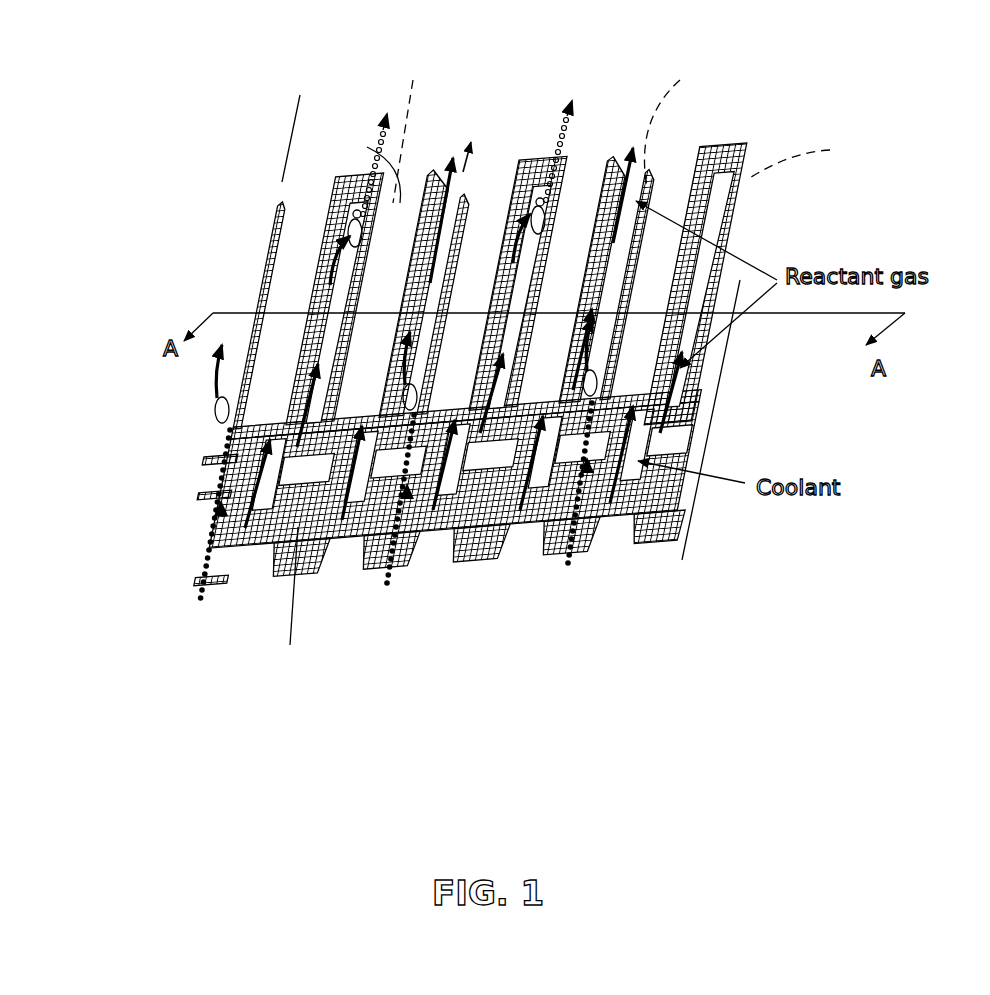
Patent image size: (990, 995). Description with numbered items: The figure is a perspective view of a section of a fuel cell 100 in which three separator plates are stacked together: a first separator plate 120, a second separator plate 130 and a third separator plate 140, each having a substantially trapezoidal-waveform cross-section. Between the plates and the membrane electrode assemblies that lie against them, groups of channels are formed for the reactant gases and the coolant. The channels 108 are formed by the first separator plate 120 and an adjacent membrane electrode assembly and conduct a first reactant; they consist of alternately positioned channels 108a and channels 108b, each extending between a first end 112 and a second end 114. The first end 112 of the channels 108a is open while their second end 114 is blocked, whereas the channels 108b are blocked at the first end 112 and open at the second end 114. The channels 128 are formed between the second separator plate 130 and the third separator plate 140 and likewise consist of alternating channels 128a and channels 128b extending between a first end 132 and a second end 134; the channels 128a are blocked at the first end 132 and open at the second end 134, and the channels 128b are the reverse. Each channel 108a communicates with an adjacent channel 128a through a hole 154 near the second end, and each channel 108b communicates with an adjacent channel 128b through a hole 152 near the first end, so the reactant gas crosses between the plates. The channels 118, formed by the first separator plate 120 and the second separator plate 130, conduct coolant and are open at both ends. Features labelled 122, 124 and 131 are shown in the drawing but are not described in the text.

The fuel cell 100 is at (716, 88).
The channels 108 is at (327, 293).
The channels 108a is at (444, 330).
The channels 108b is at (428, 262).
The first end 112 is at (262, 594).
The second end 114 is at (352, 150).
The channels 118 is at (230, 482).
The first separator plate 120 is at (690, 407).
The corrugated bottom plate 122 is at (645, 465).
The reactant gas flow path 124 is at (675, 115).
The channels 128 is at (217, 530).
The channels 128a is at (383, 515).
The channels 128b is at (229, 541).
The second separator plate 130 is at (650, 450).
The manifold opening 131 is at (350, 230).
The first end 132 is at (304, 600).
The second end 134 is at (629, 126).
The third separator plate 140 is at (650, 543).
The hole 152 is at (217, 410).
The hole 154 is at (523, 177).